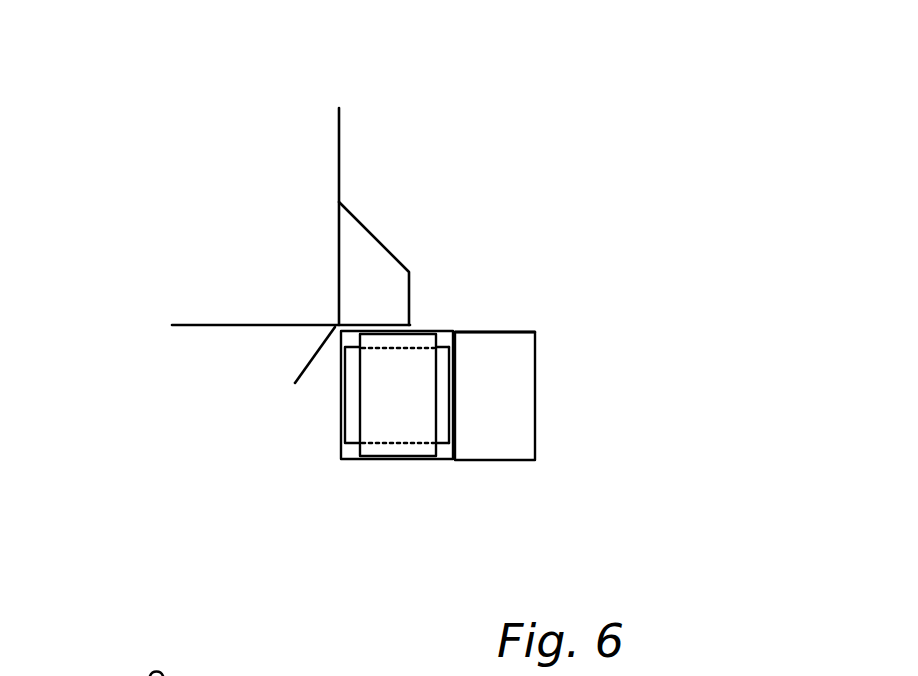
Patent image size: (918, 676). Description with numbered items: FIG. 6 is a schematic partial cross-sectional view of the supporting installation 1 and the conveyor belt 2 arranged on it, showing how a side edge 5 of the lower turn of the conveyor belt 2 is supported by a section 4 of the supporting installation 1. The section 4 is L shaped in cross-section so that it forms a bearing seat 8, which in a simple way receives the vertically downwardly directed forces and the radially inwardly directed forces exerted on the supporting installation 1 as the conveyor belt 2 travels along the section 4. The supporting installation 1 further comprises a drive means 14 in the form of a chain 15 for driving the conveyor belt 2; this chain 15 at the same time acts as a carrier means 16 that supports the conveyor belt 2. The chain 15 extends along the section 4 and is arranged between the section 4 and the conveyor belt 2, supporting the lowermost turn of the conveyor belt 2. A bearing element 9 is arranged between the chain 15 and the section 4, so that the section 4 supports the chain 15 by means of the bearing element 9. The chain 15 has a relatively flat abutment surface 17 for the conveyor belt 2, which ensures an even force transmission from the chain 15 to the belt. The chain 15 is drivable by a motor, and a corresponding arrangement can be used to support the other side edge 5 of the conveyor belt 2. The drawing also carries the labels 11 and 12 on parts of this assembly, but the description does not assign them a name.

The supporting installation 1 is at (190, 108).
The conveyor belt 2 is at (203, 332).
The section 4 is at (377, 459).
The side edge 5 is at (392, 187).
The bearing seat 8 is at (338, 460).
The bearing element 9 is at (408, 384).
The frame 11 is at (447, 372).
The element 12 is at (413, 428).
The drive means 14 is at (572, 311).
The carrier means 16 is at (572, 287).
The chain 15 is at (515, 392).
The abutment surface 17 is at (382, 332).